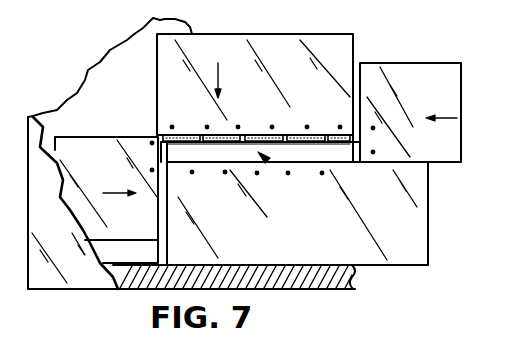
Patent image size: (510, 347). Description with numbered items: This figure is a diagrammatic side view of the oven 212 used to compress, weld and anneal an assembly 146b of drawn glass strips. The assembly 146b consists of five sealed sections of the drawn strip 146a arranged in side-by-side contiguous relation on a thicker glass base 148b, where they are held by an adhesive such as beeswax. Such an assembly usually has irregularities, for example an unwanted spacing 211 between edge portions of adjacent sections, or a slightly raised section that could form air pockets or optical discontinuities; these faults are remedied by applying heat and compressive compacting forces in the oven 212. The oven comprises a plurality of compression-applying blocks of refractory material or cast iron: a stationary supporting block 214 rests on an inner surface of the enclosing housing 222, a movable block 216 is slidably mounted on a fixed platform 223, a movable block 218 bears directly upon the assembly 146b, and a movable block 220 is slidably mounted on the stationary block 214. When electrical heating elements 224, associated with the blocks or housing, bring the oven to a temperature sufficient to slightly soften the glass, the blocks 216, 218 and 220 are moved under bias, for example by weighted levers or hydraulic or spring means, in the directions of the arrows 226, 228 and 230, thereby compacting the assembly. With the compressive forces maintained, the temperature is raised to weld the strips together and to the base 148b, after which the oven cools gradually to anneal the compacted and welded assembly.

The spacing 211 is at (202, 135).
The oven 212 is at (415, 44).
The stationary supporting block 214 is at (308, 236).
The movable block 216 is at (118, 174).
The movable block 218 is at (317, 91).
The movable block 220 is at (443, 99).
The housing 222 is at (70, 235).
The fixed platform 223 is at (137, 264).
The electrical heating elements 224 is at (225, 172).
The arrow 226 is at (123, 208).
The arrow 228 is at (217, 78).
The arrow 230 is at (440, 118).
The drawn strip 146a is at (294, 134).
The assembly 146b is at (266, 160).
The base 148b is at (335, 154).